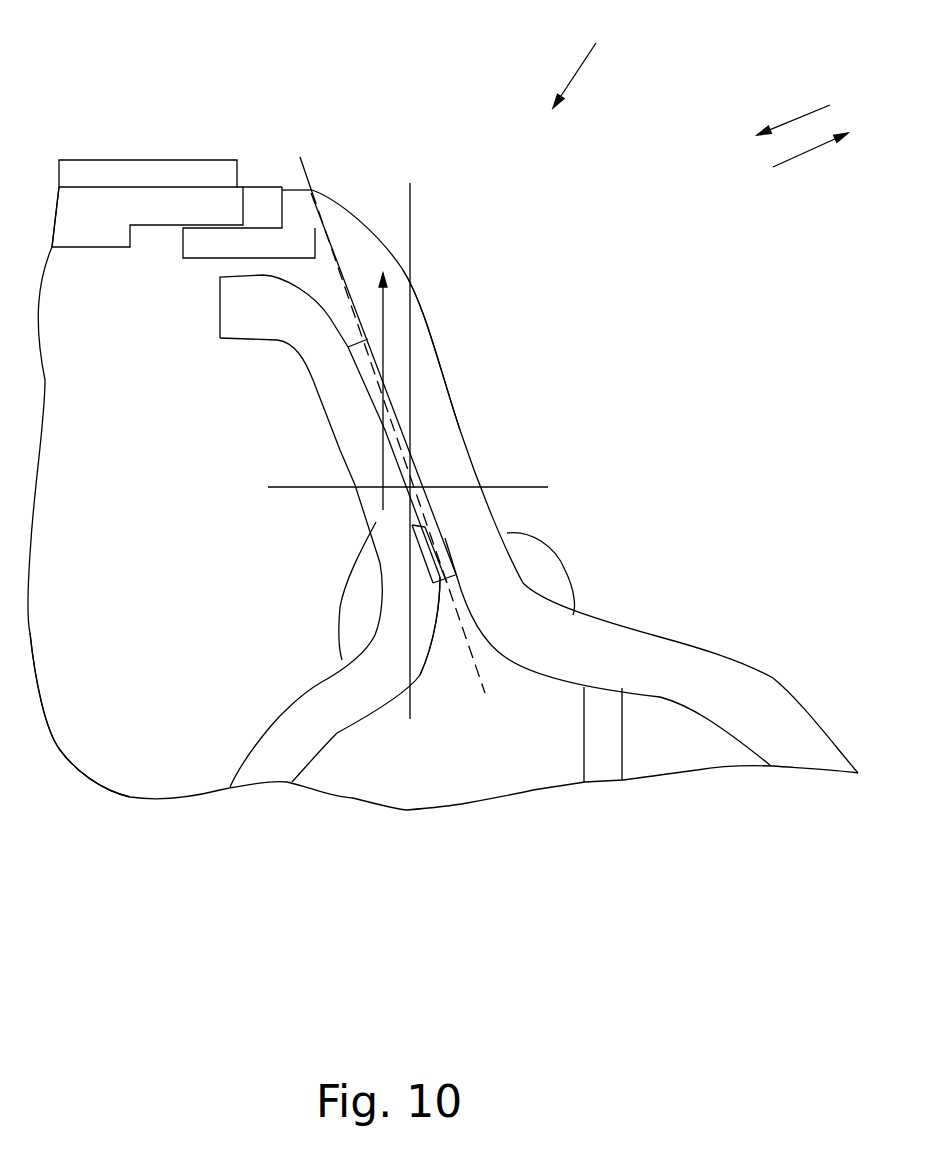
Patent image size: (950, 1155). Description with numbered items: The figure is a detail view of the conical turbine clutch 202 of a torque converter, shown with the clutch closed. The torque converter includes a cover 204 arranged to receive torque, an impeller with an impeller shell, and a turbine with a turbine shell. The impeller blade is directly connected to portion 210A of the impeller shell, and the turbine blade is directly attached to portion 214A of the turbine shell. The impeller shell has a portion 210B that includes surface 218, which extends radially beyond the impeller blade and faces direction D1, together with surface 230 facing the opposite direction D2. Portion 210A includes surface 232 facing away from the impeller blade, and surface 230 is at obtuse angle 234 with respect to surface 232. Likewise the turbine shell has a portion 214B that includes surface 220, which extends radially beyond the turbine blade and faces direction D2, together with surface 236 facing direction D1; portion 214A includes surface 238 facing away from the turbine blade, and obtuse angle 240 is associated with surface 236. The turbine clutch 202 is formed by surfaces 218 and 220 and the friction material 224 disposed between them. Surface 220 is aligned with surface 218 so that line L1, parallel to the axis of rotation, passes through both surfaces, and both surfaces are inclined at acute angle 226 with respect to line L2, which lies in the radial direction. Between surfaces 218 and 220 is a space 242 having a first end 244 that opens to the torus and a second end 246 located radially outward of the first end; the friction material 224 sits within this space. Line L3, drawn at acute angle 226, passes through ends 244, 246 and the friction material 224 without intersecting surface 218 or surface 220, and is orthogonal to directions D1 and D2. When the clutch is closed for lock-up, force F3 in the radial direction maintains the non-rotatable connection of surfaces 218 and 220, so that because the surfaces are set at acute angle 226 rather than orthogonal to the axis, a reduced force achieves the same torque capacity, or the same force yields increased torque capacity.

The conical turbine clutch 202 is at (595, 61).
The cover 204 is at (104, 187).
The portion of impeller shell 210A is at (608, 650).
The portion of impeller shell 210B is at (433, 428).
The portion of turbine shell 214A is at (332, 703).
The portion of turbine shell 214B is at (327, 370).
The surface 218 is at (445, 538).
The surface 220 is at (427, 570).
The friction material 224 is at (357, 357).
The acute angle 226 is at (427, 380).
The surface 230 is at (440, 358).
The surface 232 is at (773, 682).
The obtuse angle 234 is at (560, 557).
The surface 236 is at (330, 413).
The surface 238 is at (287, 698).
The obtuse angle 240 is at (343, 602).
The space 242 is at (361, 320).
The end 244 is at (433, 583).
The end 246 is at (348, 347).
The line L1 is at (527, 485).
The line L2 is at (410, 203).
The line L3 is at (309, 177).
The force F3 is at (387, 322).
The direction D1 is at (805, 115).
The direction D2 is at (805, 153).